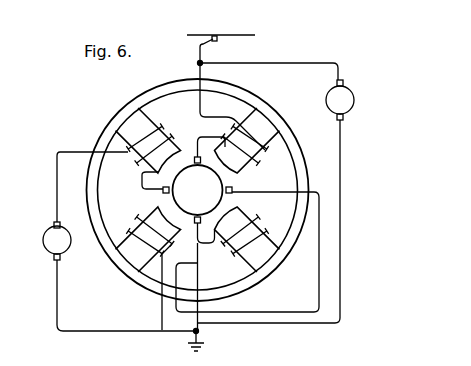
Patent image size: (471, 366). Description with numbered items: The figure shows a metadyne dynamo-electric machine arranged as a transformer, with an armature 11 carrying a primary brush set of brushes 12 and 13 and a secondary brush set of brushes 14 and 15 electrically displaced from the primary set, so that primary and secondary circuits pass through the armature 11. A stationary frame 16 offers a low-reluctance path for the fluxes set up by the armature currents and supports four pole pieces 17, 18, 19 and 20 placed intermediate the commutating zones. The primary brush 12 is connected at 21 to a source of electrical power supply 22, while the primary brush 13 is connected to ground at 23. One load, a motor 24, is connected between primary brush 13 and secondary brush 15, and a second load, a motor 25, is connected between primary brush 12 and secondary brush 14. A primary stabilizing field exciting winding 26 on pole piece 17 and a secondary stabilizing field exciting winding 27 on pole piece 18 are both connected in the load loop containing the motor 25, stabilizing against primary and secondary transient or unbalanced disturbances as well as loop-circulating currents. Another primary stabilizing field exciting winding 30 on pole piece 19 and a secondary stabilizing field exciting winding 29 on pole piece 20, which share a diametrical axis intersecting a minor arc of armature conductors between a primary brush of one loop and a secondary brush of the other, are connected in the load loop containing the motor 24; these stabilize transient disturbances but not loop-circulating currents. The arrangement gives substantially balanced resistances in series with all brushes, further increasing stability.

The armature 11 is at (163, 191).
The primary brush 12 is at (195, 156).
The primary brush 13 is at (206, 232).
The secondary brush 14 is at (233, 187).
The secondary brush 15 is at (163, 182).
The frame 16 is at (283, 283).
The pole piece 17 is at (220, 146).
The pole piece 18 is at (165, 233).
The pole piece 19 is at (266, 238).
The pole piece 20 is at (165, 128).
The connection 21 is at (207, 46).
The source of electrical power supply 22 is at (246, 37).
The ground 23 is at (199, 330).
The motor 24 is at (46, 244).
The motor 25 is at (346, 93).
The primary stabilizing field exciting winding 26 is at (262, 152).
The secondary stabilizing field exciting winding 27 is at (136, 217).
The secondary stabilizing field exciting winding 29 is at (135, 152).
The primary stabilizing field exciting winding 30 is at (250, 224).